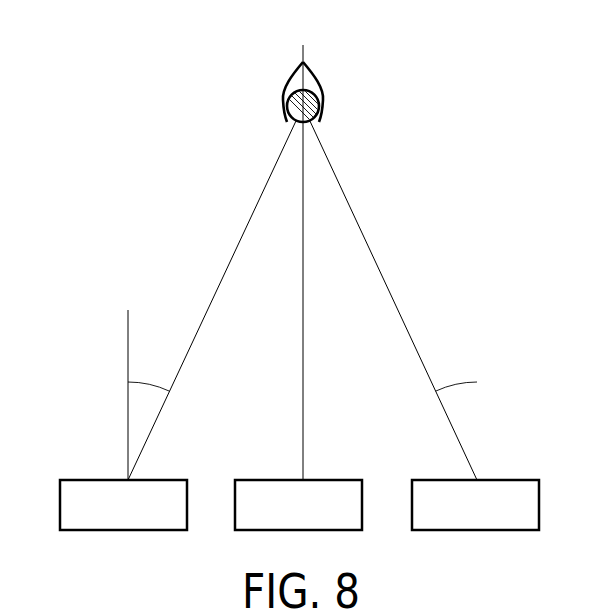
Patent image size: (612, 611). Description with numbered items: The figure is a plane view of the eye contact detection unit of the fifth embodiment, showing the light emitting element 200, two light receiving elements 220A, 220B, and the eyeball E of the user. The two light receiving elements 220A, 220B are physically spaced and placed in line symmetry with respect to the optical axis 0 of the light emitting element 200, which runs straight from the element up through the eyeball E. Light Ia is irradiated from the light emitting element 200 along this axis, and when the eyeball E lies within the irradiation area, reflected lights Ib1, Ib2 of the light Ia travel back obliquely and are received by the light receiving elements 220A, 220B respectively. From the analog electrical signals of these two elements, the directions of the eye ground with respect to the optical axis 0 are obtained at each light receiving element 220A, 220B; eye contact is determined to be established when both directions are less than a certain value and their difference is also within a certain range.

The optical axis 0 is at (303, 39).
The eyeball E is at (320, 100).
The light Ia is at (304, 293).
The reflected light Ib1 is at (223, 276).
The reflected light Ib2 is at (380, 272).
The light receiving element 220A is at (78, 478).
The light emitting element 200 is at (353, 478).
The light receiving element 220B is at (528, 478).